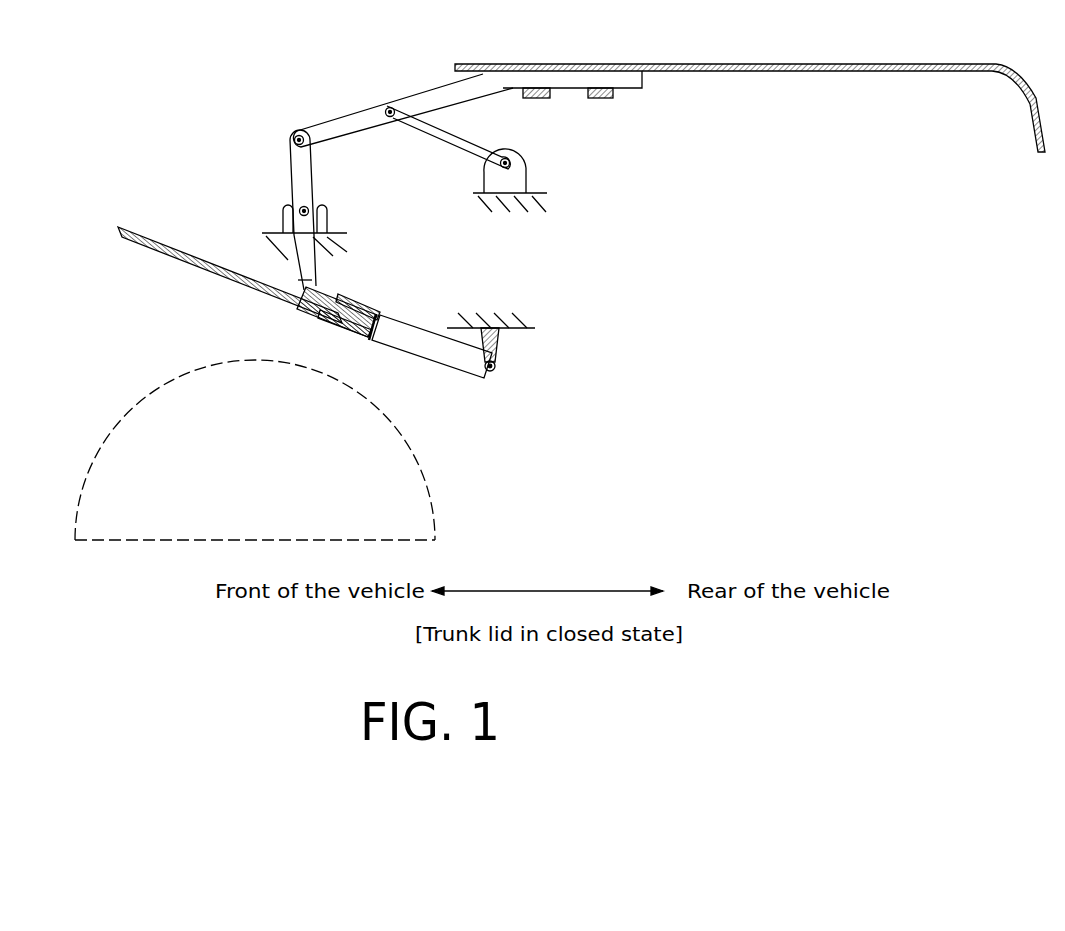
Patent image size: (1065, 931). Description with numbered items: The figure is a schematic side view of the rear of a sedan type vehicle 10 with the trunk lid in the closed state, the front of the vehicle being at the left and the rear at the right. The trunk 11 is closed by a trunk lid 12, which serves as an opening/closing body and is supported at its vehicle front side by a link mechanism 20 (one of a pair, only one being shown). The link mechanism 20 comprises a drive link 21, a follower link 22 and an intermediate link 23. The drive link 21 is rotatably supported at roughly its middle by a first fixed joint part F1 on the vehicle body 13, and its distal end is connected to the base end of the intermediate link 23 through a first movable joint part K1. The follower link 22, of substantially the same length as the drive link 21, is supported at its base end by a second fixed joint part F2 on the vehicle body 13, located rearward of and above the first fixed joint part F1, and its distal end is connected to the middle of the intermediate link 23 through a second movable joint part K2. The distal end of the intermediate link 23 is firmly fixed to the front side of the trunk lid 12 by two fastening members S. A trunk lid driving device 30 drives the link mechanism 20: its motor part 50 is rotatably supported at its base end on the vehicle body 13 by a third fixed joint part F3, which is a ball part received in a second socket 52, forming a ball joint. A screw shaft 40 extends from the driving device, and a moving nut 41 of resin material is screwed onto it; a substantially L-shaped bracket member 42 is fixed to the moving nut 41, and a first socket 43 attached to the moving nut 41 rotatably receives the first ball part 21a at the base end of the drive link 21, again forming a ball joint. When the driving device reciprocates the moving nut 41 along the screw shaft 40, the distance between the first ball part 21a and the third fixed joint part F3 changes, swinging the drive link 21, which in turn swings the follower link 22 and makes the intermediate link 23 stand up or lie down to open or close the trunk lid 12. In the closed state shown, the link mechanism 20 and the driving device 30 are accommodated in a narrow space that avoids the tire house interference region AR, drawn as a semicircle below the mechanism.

The vehicle 10 is at (163, 82).
The trunk 11 is at (791, 352).
The trunk lid 12 is at (833, 72).
The vehicle body 13 is at (272, 232).
The link mechanism 20 is at (462, 88).
The drive link 21 is at (297, 168).
The first ball part 21a is at (298, 282).
The follower link 22 is at (437, 138).
The intermediate link 23 is at (345, 128).
The trunk lid driving device 30 is at (388, 315).
The screw shaft 40 is at (188, 268).
The moving nut 41 is at (333, 323).
The bracket member 42 is at (343, 292).
The first socket 43 is at (300, 303).
The motor part 50 is at (417, 355).
The second socket 52 is at (500, 382).
The first movable joint part K1 is at (296, 136).
The second movable joint part K2 is at (389, 118).
The first fixed joint part F1 is at (300, 206).
The second fixed joint part F2 is at (520, 158).
The third fixed joint part F3 is at (488, 385).
The fastening member S is at (532, 103).
The tire house interference region AR is at (270, 480).